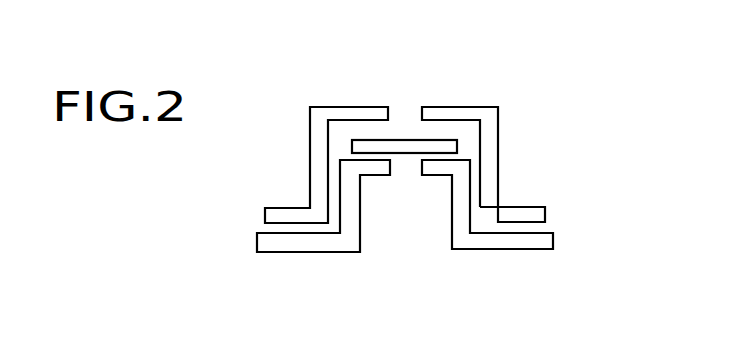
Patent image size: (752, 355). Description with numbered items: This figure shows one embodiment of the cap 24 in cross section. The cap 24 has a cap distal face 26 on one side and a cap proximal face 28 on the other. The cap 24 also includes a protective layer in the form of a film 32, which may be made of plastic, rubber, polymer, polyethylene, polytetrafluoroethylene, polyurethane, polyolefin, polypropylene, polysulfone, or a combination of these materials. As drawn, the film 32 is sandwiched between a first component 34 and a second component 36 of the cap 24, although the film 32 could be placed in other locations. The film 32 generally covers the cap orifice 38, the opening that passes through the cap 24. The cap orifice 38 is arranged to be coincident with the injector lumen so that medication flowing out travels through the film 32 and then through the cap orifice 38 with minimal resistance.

The cap 24 is at (540, 85).
The cap distal face 26 is at (302, 260).
The cap proximal face 28 is at (460, 95).
The film 32 is at (442, 149).
The first component 34 is at (535, 213).
The second component 36 is at (538, 243).
The cap orifice 38 is at (398, 108).